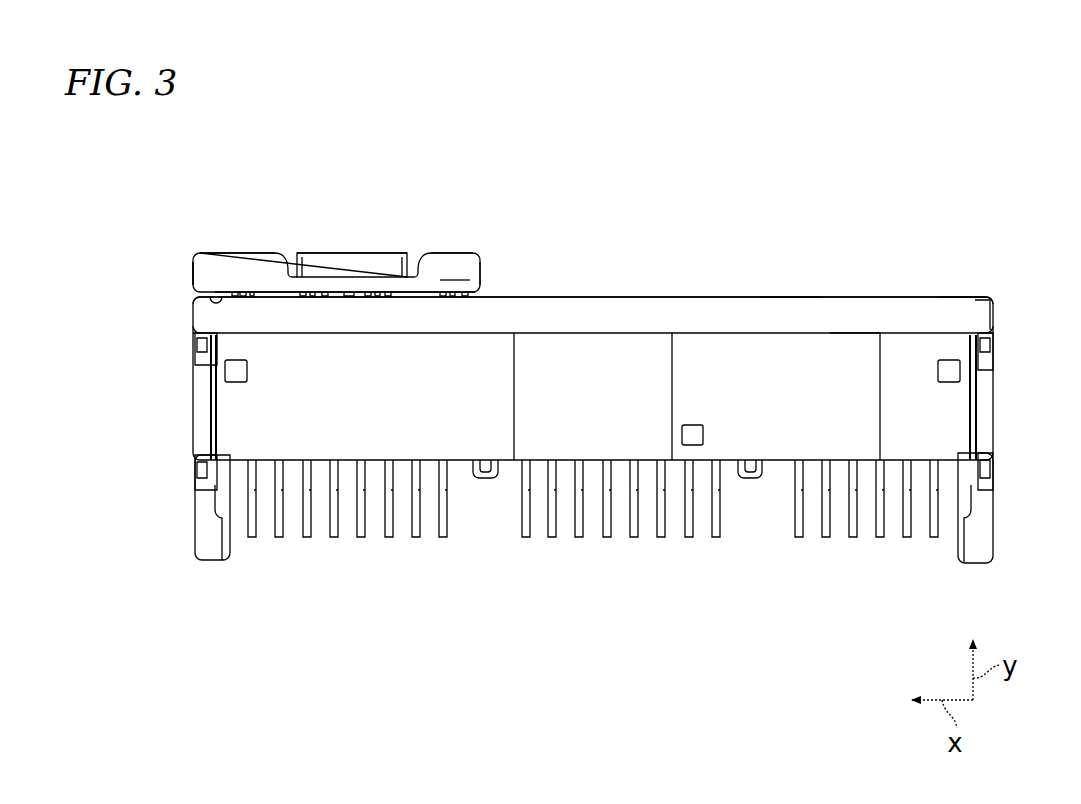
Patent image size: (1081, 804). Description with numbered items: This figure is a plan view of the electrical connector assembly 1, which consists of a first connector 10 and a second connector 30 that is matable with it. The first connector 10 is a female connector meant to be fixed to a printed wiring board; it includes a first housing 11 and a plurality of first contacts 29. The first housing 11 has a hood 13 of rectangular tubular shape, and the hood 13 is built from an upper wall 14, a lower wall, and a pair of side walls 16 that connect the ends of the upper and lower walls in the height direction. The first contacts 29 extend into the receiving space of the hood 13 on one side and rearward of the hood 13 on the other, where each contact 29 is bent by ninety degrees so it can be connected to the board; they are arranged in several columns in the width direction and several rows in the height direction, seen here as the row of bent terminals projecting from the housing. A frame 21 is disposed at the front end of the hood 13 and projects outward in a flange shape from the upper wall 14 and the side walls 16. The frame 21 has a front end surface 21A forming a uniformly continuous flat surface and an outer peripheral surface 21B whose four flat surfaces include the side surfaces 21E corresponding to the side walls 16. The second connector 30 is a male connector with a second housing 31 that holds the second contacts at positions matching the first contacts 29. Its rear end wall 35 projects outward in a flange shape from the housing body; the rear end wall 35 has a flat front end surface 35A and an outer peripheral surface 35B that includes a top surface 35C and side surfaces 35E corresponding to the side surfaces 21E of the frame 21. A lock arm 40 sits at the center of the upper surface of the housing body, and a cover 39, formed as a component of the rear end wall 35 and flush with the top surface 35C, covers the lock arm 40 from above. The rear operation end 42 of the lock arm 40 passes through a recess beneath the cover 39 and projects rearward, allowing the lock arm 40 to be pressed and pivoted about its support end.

The electrical connector assembly 1 is at (556, 204).
The first connector 10 is at (582, 286).
The first housing 11 is at (997, 316).
The hood 13 is at (965, 297).
The upper wall 14 is at (895, 370).
The side walls 16 is at (212, 405).
The frame 21 is at (698, 297).
The front end surface 21A is at (787, 297).
The outer peripheral surface 21B is at (853, 312).
The side surfaces 21E is at (995, 328).
The first contacts 29 is at (253, 540).
The second connector 30 is at (452, 234).
The second housing 31 is at (190, 268).
The rear end wall 35 is at (437, 253).
The front end surface 35A is at (222, 298).
The outer peripheral surface 35B is at (253, 253).
The top surface 35C is at (458, 265).
The side surfaces 35E is at (482, 270).
The cover 39 is at (350, 297).
The lock arm 40 is at (322, 249).
The operation end 42 is at (375, 253).